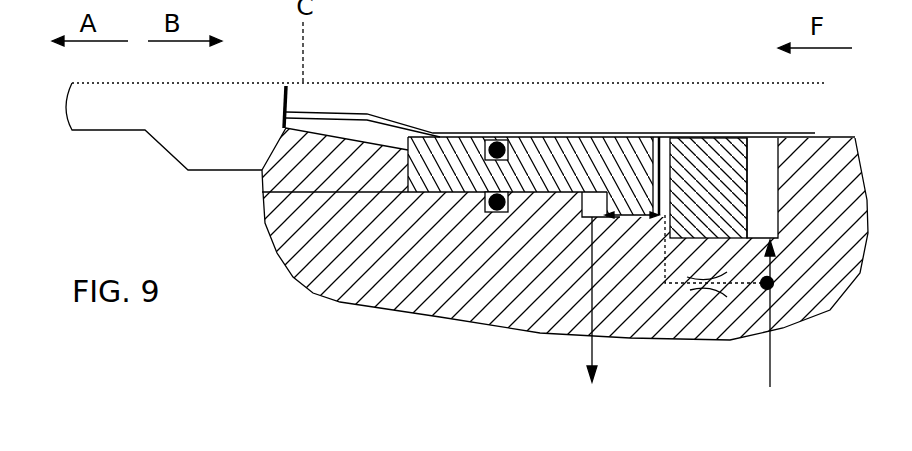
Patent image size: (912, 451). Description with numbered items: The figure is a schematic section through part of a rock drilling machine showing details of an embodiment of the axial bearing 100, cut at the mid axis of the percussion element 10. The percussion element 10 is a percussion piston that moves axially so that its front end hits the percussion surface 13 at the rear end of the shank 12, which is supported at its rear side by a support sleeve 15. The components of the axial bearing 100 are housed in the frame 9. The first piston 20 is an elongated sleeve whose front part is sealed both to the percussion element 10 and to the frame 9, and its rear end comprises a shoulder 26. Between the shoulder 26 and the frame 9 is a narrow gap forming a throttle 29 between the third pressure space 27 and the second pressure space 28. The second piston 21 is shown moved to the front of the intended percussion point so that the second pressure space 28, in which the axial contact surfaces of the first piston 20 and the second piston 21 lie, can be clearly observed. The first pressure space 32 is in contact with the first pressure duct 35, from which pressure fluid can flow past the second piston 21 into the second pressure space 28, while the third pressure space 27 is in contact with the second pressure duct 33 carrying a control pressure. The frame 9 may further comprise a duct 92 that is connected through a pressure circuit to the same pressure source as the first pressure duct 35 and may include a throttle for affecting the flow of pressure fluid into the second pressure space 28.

The frame 9 is at (312, 278).
The percussion element 10 is at (555, 119).
The shank 12 is at (168, 131).
The percussion surface 13 is at (290, 98).
The support sleeve 15 is at (262, 172).
The first piston 20 is at (595, 155).
The second piston 21 is at (722, 150).
The shoulder 26 is at (611, 218).
The third pressure space 27 is at (583, 205).
The second pressure space 28 is at (660, 155).
The throttle 29 is at (643, 220).
The first pressure space 32 is at (763, 170).
The second pressure duct 33 is at (587, 352).
The first pressure duct 35 is at (772, 355).
The duct 92 is at (733, 288).
The axial bearing 100 is at (680, 104).